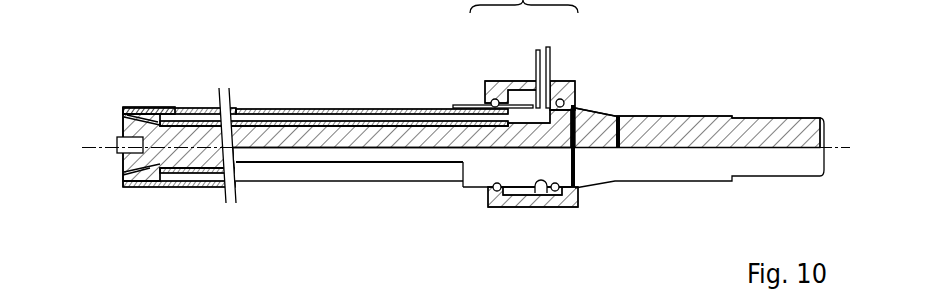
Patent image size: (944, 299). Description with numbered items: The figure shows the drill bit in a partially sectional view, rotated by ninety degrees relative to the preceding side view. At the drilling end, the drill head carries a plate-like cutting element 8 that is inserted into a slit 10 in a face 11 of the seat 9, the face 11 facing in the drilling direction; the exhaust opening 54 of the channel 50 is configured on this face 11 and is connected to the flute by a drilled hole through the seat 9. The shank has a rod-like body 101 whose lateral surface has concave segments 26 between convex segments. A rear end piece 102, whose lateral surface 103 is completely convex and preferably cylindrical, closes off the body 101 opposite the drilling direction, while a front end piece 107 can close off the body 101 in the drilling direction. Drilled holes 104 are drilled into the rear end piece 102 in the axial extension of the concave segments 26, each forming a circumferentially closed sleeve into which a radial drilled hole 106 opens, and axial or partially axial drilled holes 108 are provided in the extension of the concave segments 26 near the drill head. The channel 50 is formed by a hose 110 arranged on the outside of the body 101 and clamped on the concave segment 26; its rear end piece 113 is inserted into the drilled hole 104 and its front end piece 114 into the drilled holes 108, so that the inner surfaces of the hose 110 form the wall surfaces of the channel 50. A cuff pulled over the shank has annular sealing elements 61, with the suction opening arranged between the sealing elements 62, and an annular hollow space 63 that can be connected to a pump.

The cutting element 8 is at (118, 146).
The seat 9 is at (113, 126).
The slit 10 is at (127, 158).
The face 11 is at (113, 128).
The concave segments 26 is at (287, 126).
The channel 50 is at (320, 113).
The exhaust opening 54 is at (130, 118).
The sealing elements 61 is at (493, 99).
The sealing elements 62 is at (516, 97).
The hollow space 63 is at (537, 80).
The rod-like body 101 is at (399, 128).
The rear end piece 102 is at (477, 110).
The lateral surface 103 is at (473, 183).
The drilled holes 104 is at (517, 118).
The radial drilled hole 106 is at (547, 110).
The front end piece 107 is at (172, 163).
The drilled holes 108 is at (152, 108).
The hose 110 is at (354, 109).
The rear end piece 113 is at (486, 106).
The front end piece 114 is at (177, 107).